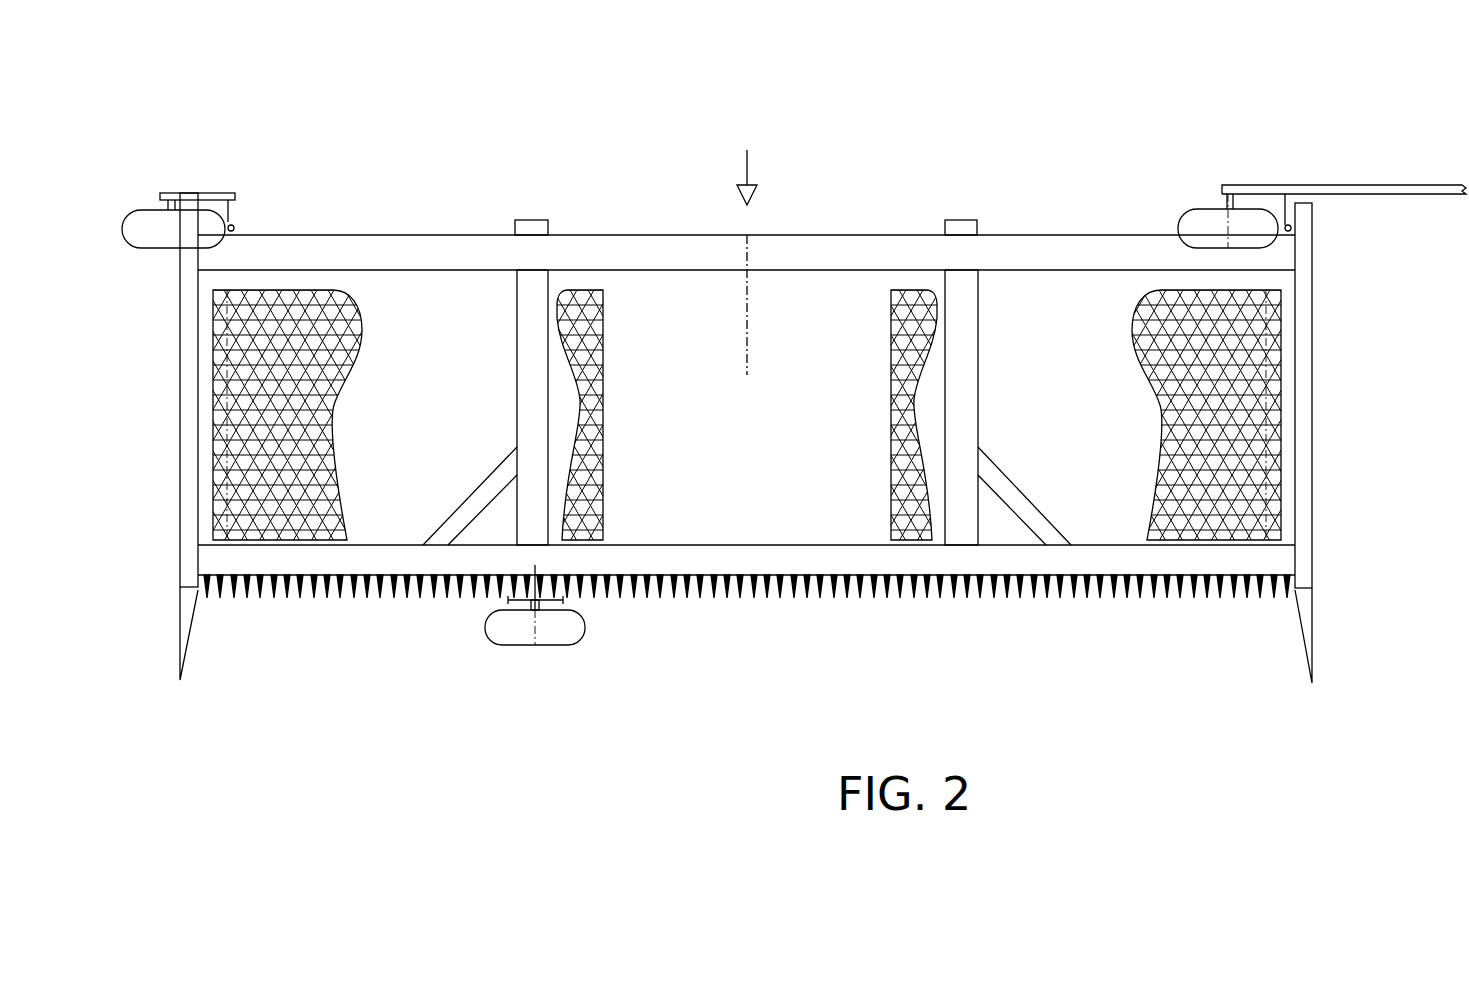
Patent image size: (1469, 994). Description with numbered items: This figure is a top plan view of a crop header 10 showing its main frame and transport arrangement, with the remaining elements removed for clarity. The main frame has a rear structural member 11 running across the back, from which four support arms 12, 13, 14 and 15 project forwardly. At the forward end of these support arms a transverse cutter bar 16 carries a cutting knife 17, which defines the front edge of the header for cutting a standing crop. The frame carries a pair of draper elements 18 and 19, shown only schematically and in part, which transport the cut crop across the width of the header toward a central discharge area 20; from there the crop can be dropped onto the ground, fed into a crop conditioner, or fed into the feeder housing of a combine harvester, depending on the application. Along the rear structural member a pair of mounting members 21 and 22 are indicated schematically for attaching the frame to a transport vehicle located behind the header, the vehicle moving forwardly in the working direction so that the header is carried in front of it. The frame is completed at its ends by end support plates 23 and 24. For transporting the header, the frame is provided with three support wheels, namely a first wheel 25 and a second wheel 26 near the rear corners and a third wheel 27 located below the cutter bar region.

The header 10 is at (901, 190).
The rear structural member 11 is at (465, 243).
The support arm 12 is at (190, 322).
The support arm 13 is at (525, 365).
The support arm 14 is at (975, 392).
The support arm 15 is at (1305, 385).
The transverse cutter bar 16 is at (730, 565).
The cutting knife 17 is at (300, 598).
The draper element 18 is at (593, 292).
The draper element 19 is at (893, 295).
The discharge area 20 is at (733, 449).
The mounting member 21 is at (533, 222).
The mounting member 22 is at (958, 222).
The end support plate 23 is at (177, 513).
The end support plate 24 is at (1313, 515).
The first wheel 25 is at (1220, 150).
The second wheel 26 is at (193, 152).
The third wheel 27 is at (548, 678).